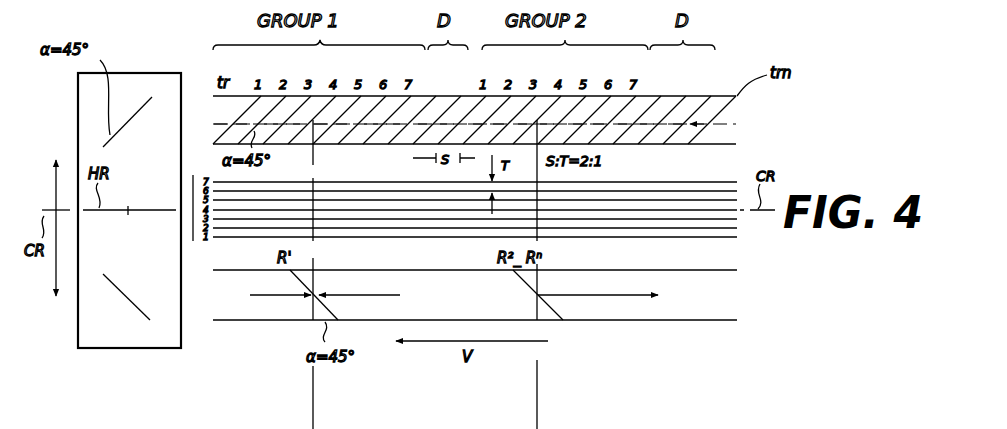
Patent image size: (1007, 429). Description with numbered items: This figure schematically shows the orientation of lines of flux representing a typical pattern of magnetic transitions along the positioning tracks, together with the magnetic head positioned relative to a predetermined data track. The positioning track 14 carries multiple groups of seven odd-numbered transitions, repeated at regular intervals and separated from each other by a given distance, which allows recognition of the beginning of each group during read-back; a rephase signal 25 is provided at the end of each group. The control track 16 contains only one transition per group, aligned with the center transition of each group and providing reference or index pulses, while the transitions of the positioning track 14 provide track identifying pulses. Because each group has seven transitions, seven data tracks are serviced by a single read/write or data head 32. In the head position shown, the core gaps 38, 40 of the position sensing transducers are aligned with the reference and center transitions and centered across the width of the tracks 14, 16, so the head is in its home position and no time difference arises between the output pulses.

The positioning track 14 is at (483, 95).
The control track 16 is at (712, 302).
The rephase signal 25 is at (432, 106).
The read/write or data head 32 is at (128, 213).
The core gap 38 is at (152, 96).
The core gap 40 is at (150, 318).